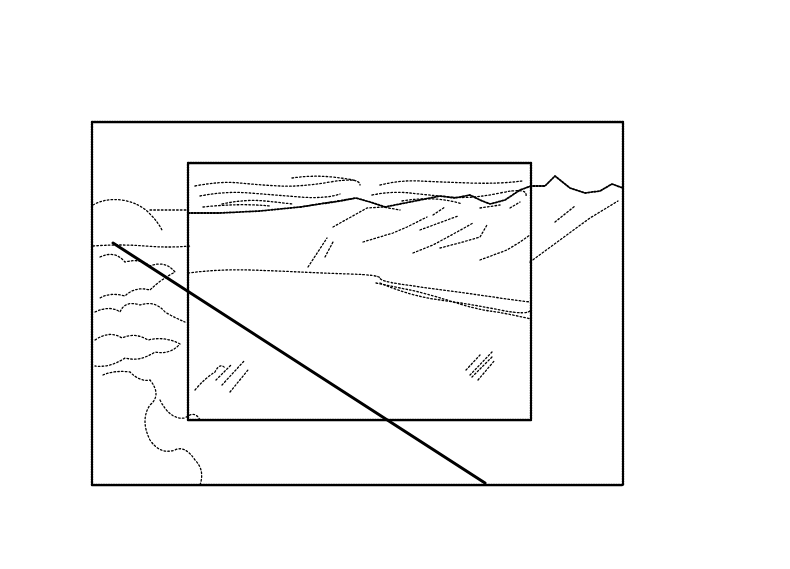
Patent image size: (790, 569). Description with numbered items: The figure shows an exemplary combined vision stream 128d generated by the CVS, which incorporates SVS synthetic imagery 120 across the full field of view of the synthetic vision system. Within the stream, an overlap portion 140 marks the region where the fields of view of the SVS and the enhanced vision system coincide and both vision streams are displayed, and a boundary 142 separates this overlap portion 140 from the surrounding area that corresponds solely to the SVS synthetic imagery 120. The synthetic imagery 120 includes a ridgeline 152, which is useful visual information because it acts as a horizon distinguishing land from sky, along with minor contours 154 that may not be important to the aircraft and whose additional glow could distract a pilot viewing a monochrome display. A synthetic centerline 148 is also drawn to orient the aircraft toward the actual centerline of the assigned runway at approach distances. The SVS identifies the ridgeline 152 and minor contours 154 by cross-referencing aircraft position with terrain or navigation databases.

The combined vision stream 128d is at (103, 73).
The SVS synthetic imagery 120 is at (262, 464).
The boundary 142 is at (530, 378).
The ridgeline 152 is at (356, 198).
The minor contours 154 is at (458, 216).
The overlap portion 140 is at (493, 358).
The synthetic centerline 148 is at (446, 466).